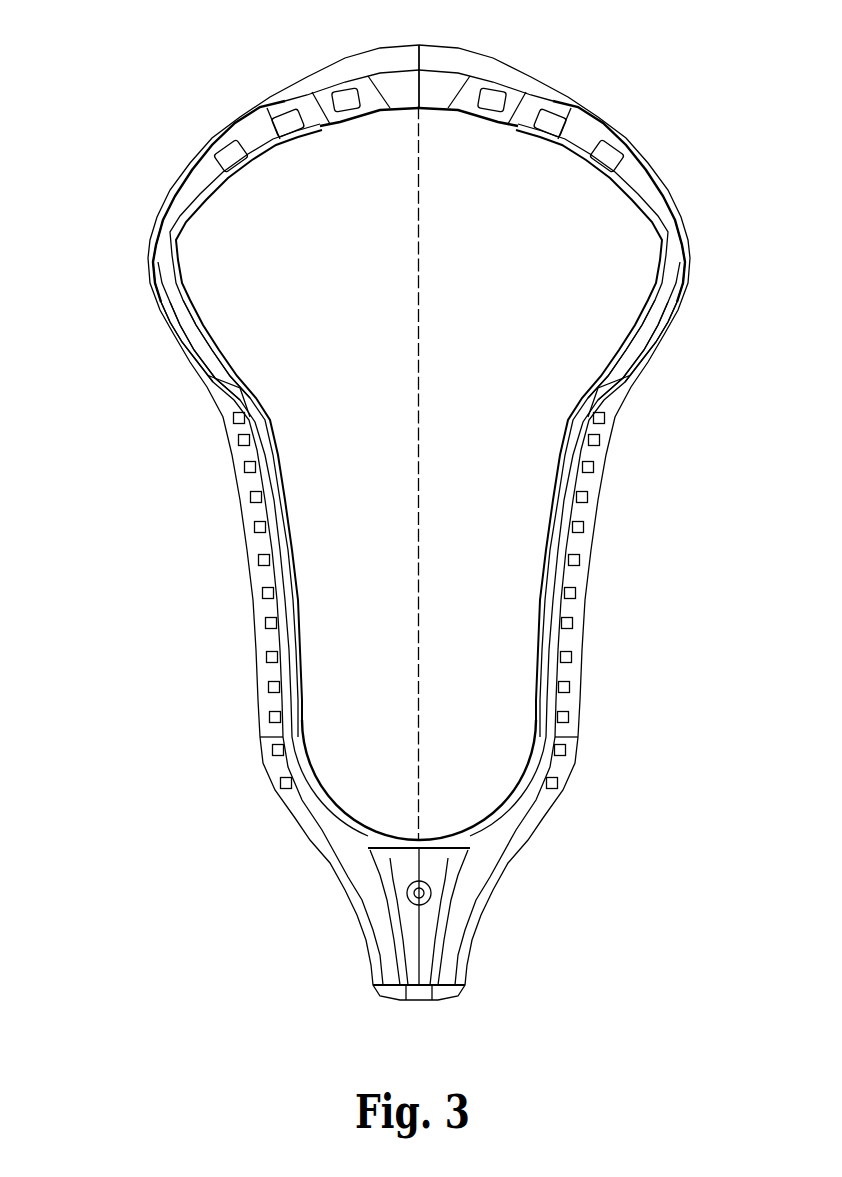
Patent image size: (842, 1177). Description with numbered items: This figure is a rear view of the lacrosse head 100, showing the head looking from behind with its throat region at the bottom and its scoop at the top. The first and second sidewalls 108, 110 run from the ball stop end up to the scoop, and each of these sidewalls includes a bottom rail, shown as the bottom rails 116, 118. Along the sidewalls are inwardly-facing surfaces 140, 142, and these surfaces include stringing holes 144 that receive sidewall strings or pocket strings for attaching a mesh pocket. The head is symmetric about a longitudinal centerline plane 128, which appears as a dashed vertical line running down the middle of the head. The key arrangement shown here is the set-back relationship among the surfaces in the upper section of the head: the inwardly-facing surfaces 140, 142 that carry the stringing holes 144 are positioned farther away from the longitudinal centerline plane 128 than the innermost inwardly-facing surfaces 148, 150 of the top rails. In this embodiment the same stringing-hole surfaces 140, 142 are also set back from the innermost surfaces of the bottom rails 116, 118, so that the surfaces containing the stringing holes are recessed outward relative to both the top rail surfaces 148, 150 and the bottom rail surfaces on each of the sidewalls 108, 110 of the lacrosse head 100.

The lacrosse head 100 is at (130, 94).
The first sidewall 108 is at (582, 613).
The second sidewall 110 is at (257, 603).
The bottom rail 116 is at (580, 540).
The bottom rail 118 is at (260, 543).
The longitudinal centerline plane 128 is at (422, 186).
The inwardly-facing surface 140 is at (633, 337).
The inwardly-facing surface 142 is at (215, 335).
The stringing holes 144 is at (627, 347).
The innermost inwardly-facing surface 148 is at (630, 317).
The innermost inwardly-facing surface 150 is at (207, 315).